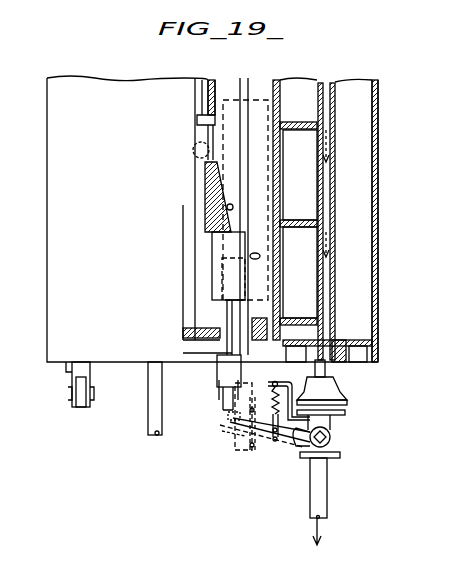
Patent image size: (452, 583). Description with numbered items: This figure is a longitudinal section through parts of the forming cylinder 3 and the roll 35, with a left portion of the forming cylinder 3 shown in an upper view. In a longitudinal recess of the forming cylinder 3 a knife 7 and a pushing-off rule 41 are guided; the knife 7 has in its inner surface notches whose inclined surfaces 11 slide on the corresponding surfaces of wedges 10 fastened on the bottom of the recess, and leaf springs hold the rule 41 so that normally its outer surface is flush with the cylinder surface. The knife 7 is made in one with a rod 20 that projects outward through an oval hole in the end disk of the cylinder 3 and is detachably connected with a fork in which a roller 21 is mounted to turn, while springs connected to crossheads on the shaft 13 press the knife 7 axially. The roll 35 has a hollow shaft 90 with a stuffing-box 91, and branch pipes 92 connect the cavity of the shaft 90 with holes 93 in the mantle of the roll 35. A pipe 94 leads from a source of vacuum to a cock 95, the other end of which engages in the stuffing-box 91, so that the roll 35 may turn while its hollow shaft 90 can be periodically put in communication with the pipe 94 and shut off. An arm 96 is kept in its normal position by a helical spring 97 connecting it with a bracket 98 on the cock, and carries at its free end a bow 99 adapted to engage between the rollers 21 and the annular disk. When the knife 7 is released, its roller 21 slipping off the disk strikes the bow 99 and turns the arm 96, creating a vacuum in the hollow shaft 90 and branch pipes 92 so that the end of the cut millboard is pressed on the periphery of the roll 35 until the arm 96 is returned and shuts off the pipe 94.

The forming cylinder 3 is at (62, 192).
The knife 7 is at (226, 90).
The wedge 10 is at (200, 187).
The inclined surface 11 is at (206, 222).
The shaft 13 is at (153, 394).
The rod 20 is at (222, 316).
The roller 21 is at (79, 407).
The roll 35 is at (378, 214).
The pushing-off rule 41 is at (265, 93).
The hollow shaft 90 is at (330, 186).
The stuffing-box 91 is at (334, 386).
The branch pipe 92 is at (288, 130).
The hole 93 is at (285, 122).
The pipe 94 is at (325, 491).
The cock 95 is at (333, 437).
The arm 96 is at (250, 440).
The helical spring 97 is at (265, 432).
The bracket 98 is at (289, 455).
The bow 99 is at (235, 428).